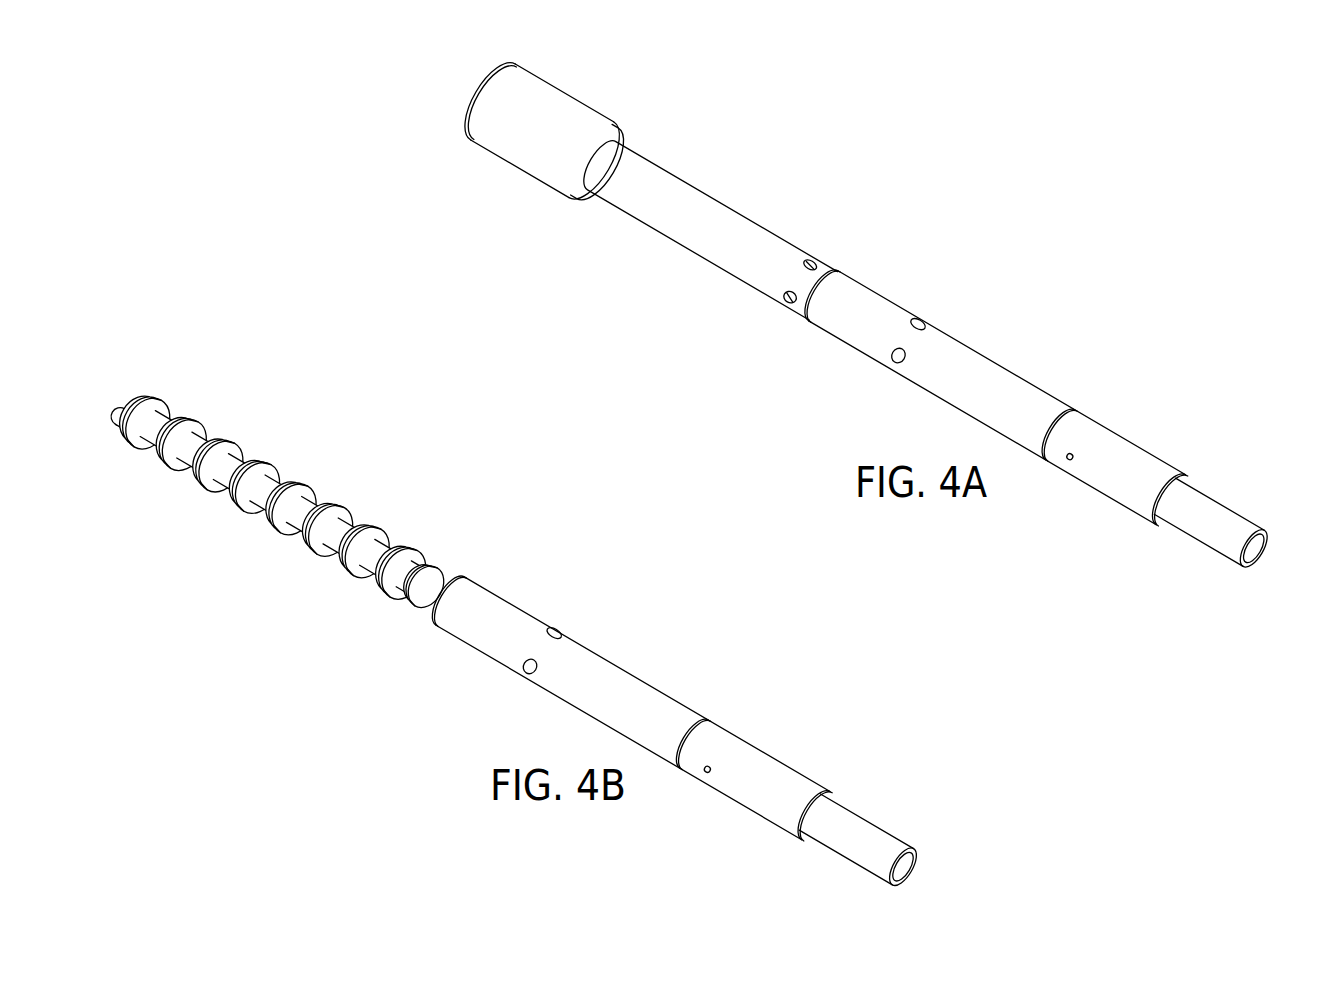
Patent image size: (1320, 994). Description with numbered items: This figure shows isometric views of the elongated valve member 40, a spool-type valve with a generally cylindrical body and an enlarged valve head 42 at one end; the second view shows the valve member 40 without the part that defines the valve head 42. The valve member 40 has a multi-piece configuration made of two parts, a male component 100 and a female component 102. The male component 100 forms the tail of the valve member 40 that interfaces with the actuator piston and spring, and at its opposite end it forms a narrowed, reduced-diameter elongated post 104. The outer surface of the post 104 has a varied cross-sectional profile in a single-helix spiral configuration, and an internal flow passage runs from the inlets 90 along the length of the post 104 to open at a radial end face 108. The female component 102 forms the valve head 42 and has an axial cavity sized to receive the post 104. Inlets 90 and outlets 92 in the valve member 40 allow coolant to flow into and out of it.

In FIG. 4A, the valve member 40 is at (896, 165).
In FIG. 4B, the valve member 40 is at (449, 503).
In FIG. 4A, the valve head 42 is at (542, 98).
In FIG. 4A, the inlet 90 is at (916, 318).
In FIG. 4B, the inlet 90 is at (551, 634).
In FIG. 4A, the outlet 92 is at (811, 258).
In FIG. 4A, the male component 100 is at (1009, 357).
In FIG. 4B, the male component 100 is at (646, 673).
In FIG. 4A, the female component 102 is at (728, 207).
In FIG. 4B, the post 104 is at (252, 472).
In FIG. 4B, the radial end face 108 is at (122, 403).